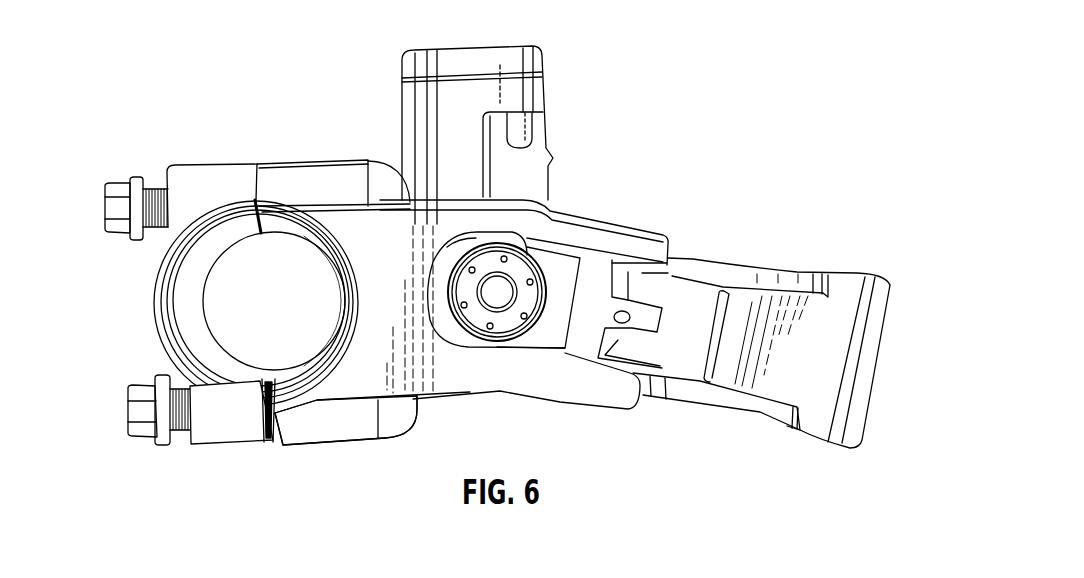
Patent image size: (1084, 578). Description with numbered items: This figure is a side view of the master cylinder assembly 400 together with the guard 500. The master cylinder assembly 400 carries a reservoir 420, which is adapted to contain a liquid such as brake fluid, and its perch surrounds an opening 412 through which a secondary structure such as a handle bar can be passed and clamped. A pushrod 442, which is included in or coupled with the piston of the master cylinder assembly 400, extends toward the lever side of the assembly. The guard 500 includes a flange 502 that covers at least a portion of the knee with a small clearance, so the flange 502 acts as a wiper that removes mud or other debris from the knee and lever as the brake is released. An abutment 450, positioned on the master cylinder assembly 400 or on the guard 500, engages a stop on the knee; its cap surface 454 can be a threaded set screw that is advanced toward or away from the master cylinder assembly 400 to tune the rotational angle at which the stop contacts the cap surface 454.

The master cylinder assembly 400 is at (626, 54).
The opening 412 is at (243, 313).
The reservoir 420 is at (453, 153).
The pushrod 442 is at (490, 292).
The abutment 450 is at (636, 327).
The cap surface 454 is at (624, 311).
The guard 500 is at (827, 373).
The flange 502 is at (713, 283).